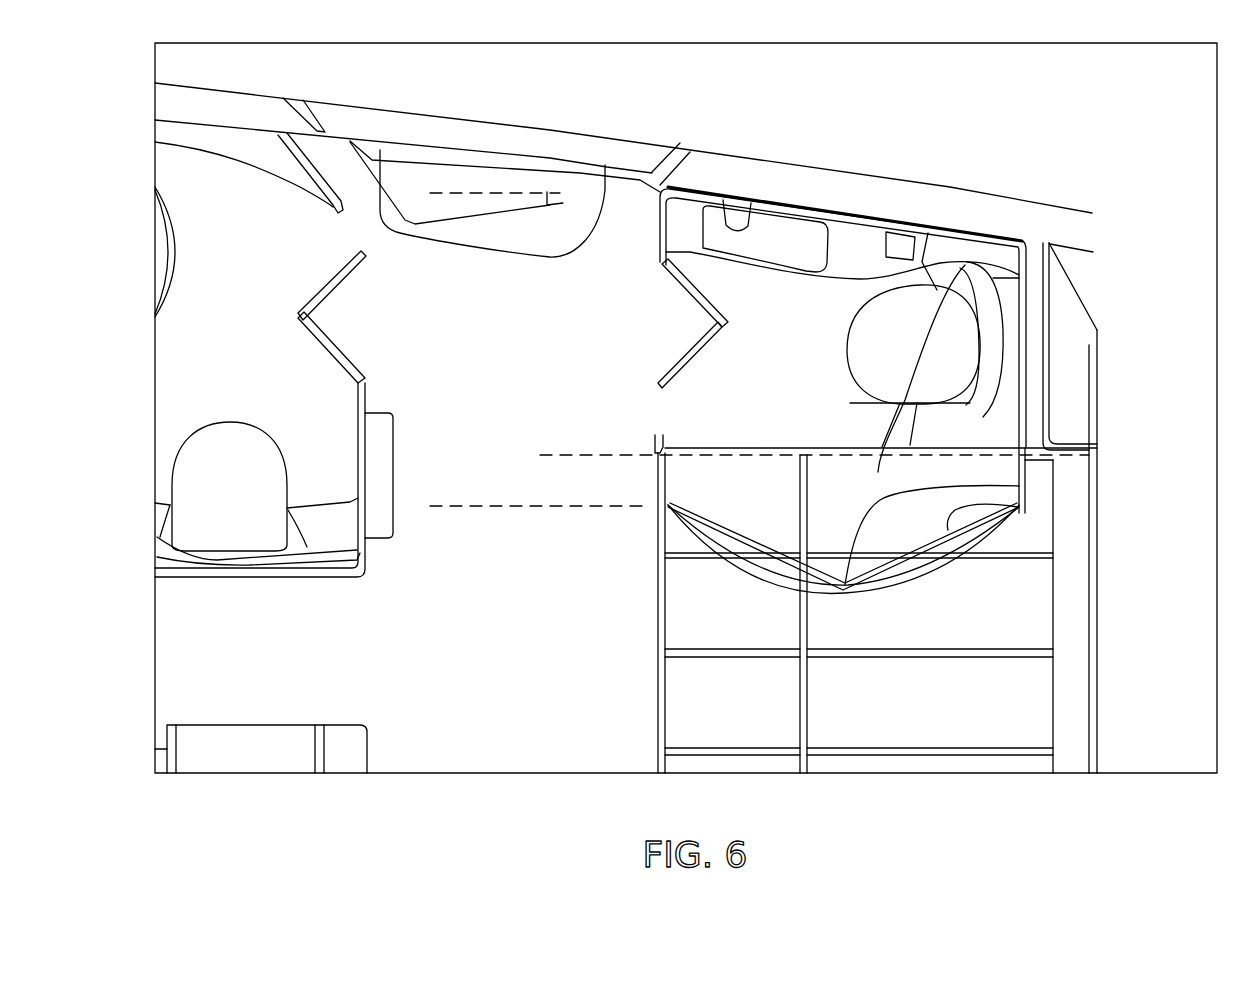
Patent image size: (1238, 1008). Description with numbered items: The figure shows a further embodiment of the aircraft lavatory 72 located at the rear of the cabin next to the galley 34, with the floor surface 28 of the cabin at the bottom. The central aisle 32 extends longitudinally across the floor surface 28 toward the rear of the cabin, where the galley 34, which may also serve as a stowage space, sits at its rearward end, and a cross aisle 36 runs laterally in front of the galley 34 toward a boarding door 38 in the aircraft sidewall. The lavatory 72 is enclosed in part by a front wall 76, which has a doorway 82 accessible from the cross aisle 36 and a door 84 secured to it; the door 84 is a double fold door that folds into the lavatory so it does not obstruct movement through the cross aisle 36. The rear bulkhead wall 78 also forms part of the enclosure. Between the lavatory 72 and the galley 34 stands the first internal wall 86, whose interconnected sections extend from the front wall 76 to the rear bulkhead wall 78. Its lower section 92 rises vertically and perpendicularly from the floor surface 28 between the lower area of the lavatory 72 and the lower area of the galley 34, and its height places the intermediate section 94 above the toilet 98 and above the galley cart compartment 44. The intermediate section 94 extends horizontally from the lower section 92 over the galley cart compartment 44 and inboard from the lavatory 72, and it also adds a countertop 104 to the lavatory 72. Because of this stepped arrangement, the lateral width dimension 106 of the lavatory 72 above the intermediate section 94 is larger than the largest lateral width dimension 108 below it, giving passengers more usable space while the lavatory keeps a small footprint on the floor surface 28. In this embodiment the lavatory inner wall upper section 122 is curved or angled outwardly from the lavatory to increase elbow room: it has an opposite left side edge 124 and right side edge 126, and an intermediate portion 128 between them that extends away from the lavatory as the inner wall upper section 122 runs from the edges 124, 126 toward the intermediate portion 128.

The floor surface 28 is at (168, 633).
The central aisle 32 is at (198, 676).
The galley 34 is at (1035, 613).
The cross aisle 36 is at (491, 730).
The boarding door 38 is at (517, 142).
The galley cart compartment 44 is at (640, 742).
The lavatory 72 is at (872, 283).
The front wall 76 is at (660, 222).
The rear bulkhead wall 78 is at (1028, 339).
The doorway 82 is at (605, 190).
The door 84 is at (690, 285).
The first internal wall 86 is at (945, 460).
The lower section 92 is at (768, 440).
The intermediate section 94 is at (790, 473).
The toilet 98 is at (965, 265).
The countertop 104 is at (882, 472).
The lateral width dimension 106 is at (446, 200).
The largest lateral width dimension 108 is at (550, 200).
The inner wall upper section 122 is at (1023, 510).
The left side edge 124 is at (1023, 513).
The right side edge 126 is at (668, 505).
The intermediate portion 128 is at (1023, 490).